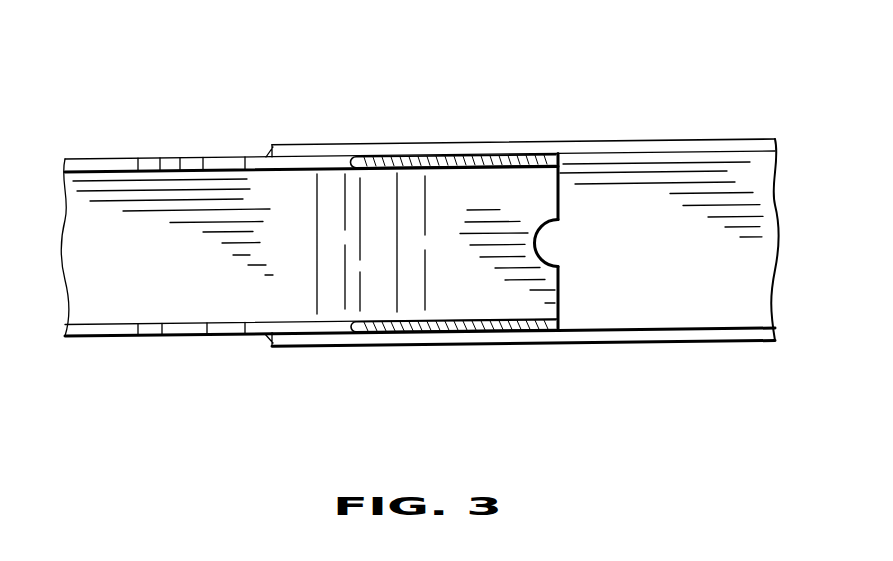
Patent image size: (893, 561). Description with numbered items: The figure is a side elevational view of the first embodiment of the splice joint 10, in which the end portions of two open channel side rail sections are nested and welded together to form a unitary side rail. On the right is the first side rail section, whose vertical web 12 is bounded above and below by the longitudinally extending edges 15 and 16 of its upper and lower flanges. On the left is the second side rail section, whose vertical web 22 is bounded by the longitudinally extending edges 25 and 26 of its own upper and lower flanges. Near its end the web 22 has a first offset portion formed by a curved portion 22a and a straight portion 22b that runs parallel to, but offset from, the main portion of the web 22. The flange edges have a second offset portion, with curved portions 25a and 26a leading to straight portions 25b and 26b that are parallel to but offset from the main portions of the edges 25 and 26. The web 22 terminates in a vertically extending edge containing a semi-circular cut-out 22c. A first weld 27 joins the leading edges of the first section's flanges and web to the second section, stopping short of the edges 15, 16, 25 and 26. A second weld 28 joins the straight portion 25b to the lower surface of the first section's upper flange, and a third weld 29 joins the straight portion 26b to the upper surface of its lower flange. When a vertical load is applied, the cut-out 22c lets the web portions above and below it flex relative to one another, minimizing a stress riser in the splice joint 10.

The splice joint 10 is at (620, 75).
The vertical web 12 is at (725, 257).
The longitudinally extending edge 15 is at (732, 148).
The longitudinally extending edge 16 is at (713, 340).
The vertical web 22 is at (148, 266).
The curved portion 22a is at (378, 225).
The straight portion 22b is at (502, 207).
The cut-out 22c is at (548, 234).
The longitudinally extending edge 25 is at (95, 158).
The curved portion 25a is at (167, 158).
The straight portion 25b is at (325, 162).
The longitudinally extending edge 26 is at (100, 337).
The curved portion 26a is at (190, 337).
The straight portion 26b is at (320, 337).
The first weld 27 is at (265, 157).
The second weld 28 is at (445, 157).
The third weld 29 is at (487, 333).